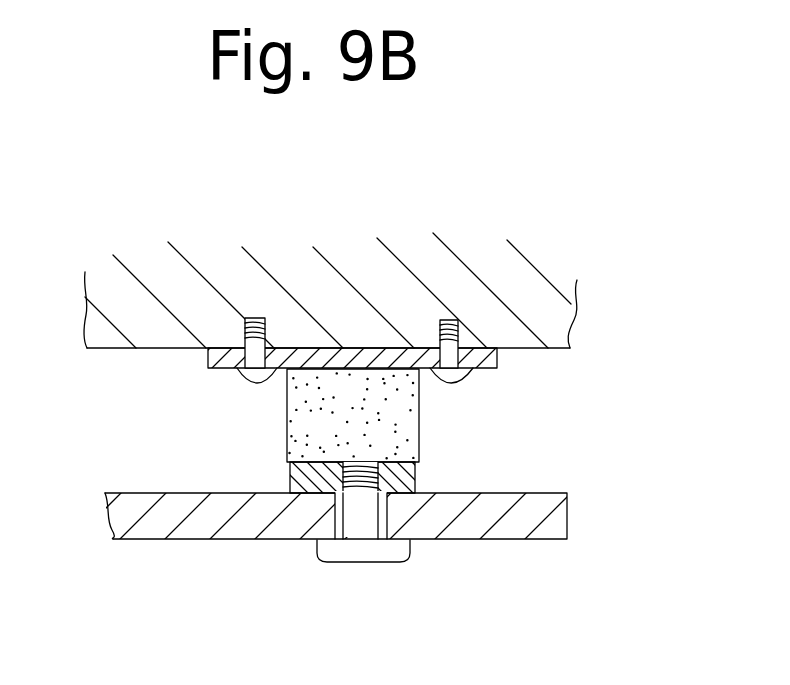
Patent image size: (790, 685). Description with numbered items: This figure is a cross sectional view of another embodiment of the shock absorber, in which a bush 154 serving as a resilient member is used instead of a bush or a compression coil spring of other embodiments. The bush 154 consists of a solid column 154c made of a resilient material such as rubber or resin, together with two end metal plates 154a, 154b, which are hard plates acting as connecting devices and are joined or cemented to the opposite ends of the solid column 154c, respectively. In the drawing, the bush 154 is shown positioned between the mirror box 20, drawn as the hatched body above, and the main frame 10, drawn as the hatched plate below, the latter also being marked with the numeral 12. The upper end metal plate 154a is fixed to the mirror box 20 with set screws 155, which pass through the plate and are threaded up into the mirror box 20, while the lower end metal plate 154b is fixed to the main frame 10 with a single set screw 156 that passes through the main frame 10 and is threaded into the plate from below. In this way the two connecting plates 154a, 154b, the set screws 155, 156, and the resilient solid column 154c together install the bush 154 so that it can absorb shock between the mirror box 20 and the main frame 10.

The main frame 10 is at (379, 535).
The mounting surface of base plate 12 is at (547, 522).
The mirror box 20 is at (550, 310).
The bush 154 is at (297, 432).
The end metal plate 154a is at (498, 365).
The end metal plate 154b is at (290, 478).
The solid column 154c is at (308, 431).
The set screws 155 is at (438, 318).
The set screw 156 is at (363, 522).